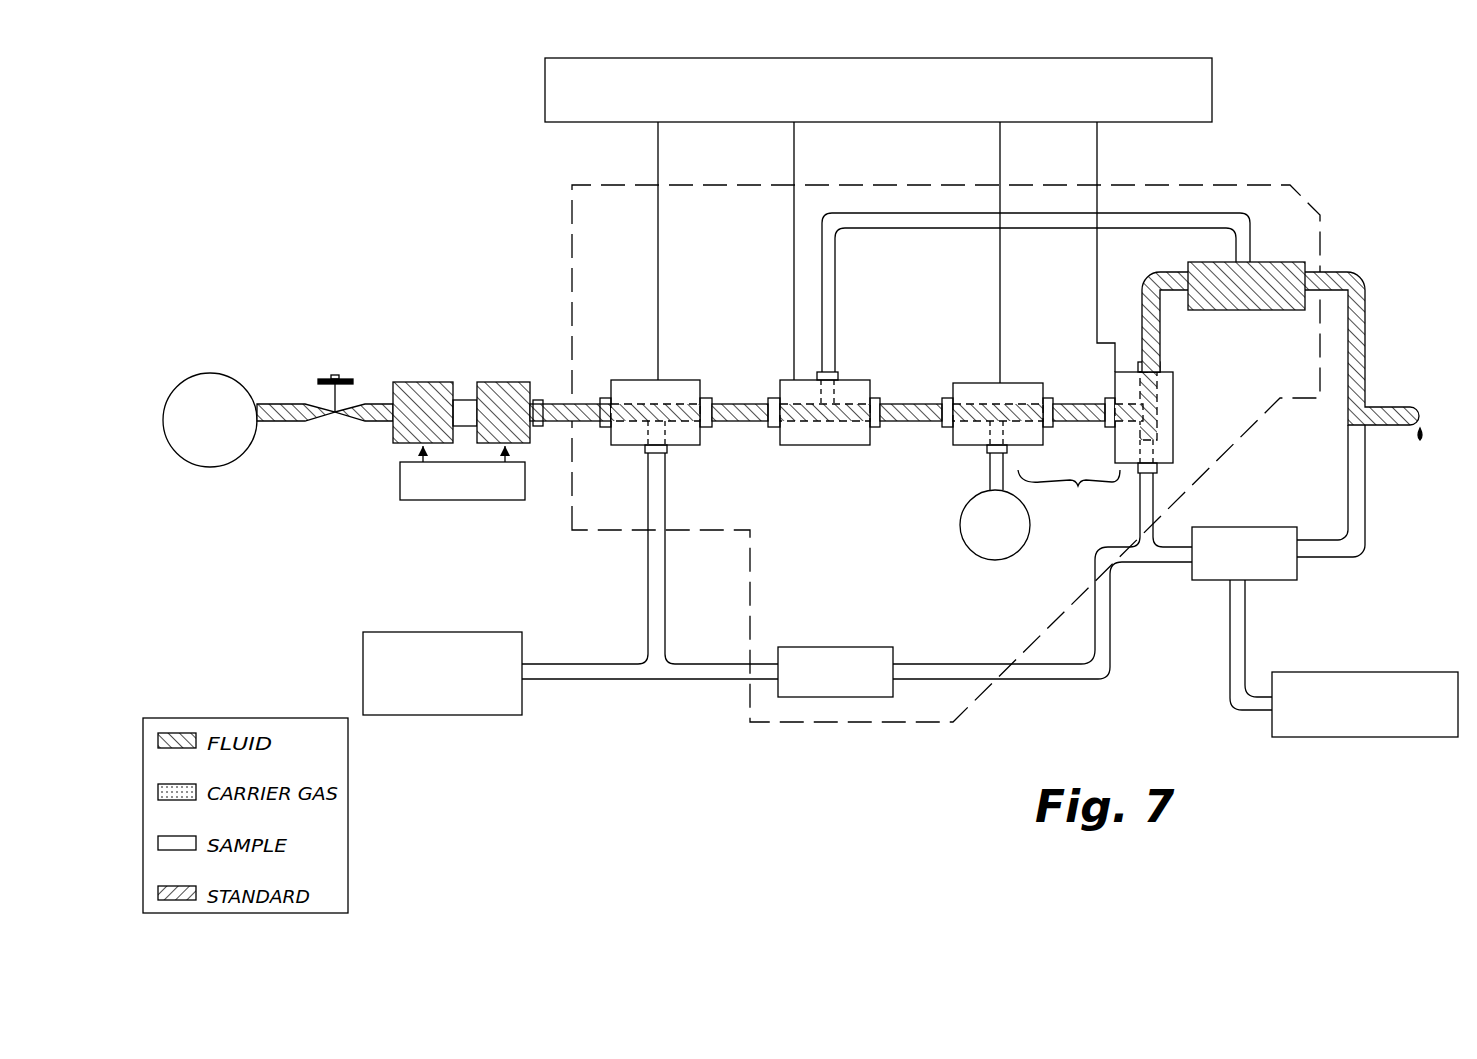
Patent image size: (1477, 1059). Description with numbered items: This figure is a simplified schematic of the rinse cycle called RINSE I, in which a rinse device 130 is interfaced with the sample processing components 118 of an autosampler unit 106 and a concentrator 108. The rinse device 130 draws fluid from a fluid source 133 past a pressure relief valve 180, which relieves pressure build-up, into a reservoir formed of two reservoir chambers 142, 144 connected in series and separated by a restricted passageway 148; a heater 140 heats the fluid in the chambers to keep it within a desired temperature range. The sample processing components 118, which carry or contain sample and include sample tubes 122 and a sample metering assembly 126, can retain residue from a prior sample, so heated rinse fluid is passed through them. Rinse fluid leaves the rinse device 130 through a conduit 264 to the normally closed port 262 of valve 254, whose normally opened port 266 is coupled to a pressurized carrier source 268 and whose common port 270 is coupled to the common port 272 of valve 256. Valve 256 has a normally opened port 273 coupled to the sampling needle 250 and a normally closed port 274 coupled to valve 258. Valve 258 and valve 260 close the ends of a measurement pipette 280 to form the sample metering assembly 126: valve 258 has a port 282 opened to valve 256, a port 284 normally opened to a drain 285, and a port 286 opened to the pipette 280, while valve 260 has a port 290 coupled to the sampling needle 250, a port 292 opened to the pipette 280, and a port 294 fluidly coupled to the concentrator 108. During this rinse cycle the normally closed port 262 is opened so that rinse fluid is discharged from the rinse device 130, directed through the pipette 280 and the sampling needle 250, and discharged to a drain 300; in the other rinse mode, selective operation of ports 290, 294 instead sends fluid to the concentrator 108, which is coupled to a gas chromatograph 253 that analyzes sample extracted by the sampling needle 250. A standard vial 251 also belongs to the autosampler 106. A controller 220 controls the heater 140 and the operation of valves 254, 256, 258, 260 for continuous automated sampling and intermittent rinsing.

The autosampler unit 106 is at (1300, 190).
The concentrator 108 is at (1297, 572).
The sample processing components 118 is at (1213, 245).
The sample tubes 122 is at (1167, 268).
The sample metering assembly 126 is at (1069, 489).
The rinse device 130 is at (464, 378).
The fluid source 133 is at (205, 380).
The heater 140 is at (455, 500).
The reservoir chamber 142 is at (413, 382).
The reservoir chamber 144 is at (502, 382).
The restricted passageway 148 is at (423, 455).
The pressure relief valve 180 is at (332, 378).
The controller 220 is at (1222, 80).
The sampling needle 250 is at (1290, 262).
The standard vial 251 is at (802, 646).
The gas chromatograph 253 is at (1332, 670).
The valve 254 is at (700, 380).
The valve 256 is at (872, 380).
The valve 258 is at (973, 382).
The valve 260 is at (1202, 380).
The normally closed port 262 is at (618, 428).
The conduit 264 is at (547, 402).
The normally opened port 266 is at (666, 465).
The pressurized carrier source 268 is at (472, 632).
The common port 270 is at (704, 403).
The common port 272 is at (776, 428).
The normally opened port 273 is at (820, 372).
The normally closed port 274 is at (872, 430).
The measurement pipette 280 is at (1079, 438).
The port 282 is at (952, 432).
The port 284 is at (988, 458).
The drain 285 is at (992, 562).
The port 286 is at (1050, 400).
The port 290 is at (1140, 368).
The port 292 is at (1173, 415).
The port 294 is at (1173, 456).
The drain 300 is at (1432, 430).